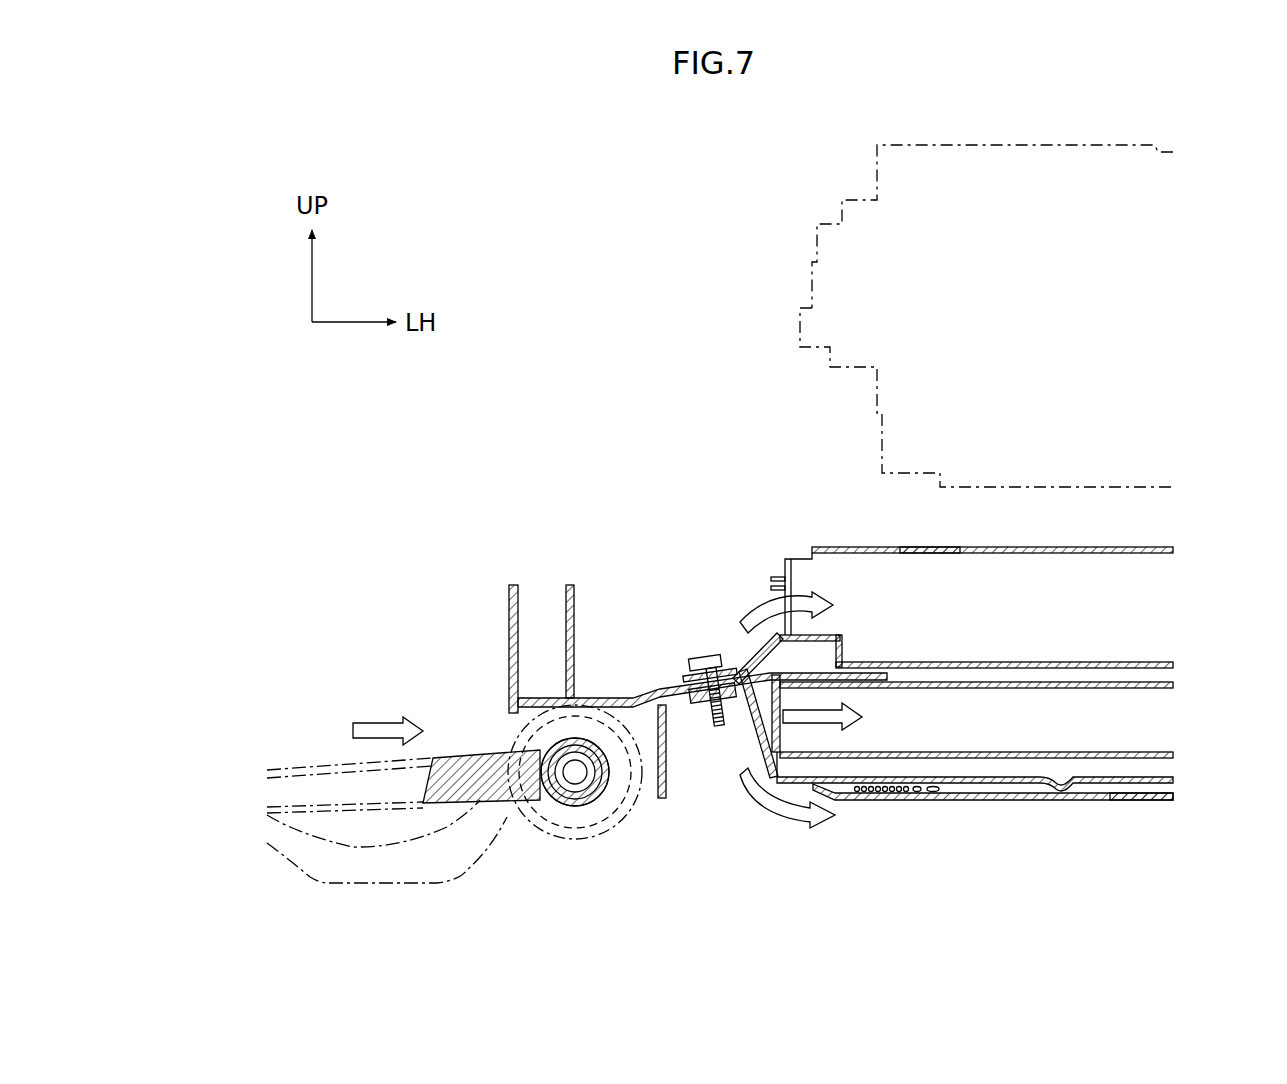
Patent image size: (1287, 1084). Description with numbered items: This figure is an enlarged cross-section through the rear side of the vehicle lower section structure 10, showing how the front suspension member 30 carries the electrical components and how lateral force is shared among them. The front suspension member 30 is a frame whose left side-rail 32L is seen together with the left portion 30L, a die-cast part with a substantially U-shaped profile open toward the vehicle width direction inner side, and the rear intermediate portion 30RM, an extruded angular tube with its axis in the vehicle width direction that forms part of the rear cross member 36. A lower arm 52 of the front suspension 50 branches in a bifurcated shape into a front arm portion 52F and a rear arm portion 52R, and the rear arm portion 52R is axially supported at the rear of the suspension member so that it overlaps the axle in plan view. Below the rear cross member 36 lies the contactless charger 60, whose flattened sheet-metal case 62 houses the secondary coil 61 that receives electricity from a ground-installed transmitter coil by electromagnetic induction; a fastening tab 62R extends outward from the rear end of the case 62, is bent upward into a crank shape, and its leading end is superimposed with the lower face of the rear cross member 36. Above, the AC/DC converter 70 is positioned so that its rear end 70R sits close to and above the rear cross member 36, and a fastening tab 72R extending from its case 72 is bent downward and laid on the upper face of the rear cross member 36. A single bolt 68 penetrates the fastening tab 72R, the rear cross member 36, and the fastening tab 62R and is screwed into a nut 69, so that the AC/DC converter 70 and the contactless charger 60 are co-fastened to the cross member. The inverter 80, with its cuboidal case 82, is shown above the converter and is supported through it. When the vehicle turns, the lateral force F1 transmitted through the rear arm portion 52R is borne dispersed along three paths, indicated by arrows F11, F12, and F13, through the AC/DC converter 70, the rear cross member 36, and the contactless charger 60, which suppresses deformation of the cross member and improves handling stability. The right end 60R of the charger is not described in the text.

The vehicle lower section structure 10 is at (620, 416).
The front suspension member 30 is at (497, 550).
The left portion 30L is at (622, 697).
The rear intermediate portion 30RM is at (1033, 687).
The left side-rail 32L is at (508, 622).
The rear cross member 36 is at (953, 680).
The front suspension 50 is at (296, 677).
The lower arm 52 is at (330, 762).
The front arm portion 52F is at (360, 885).
The rear arm portion 52R is at (480, 756).
The contactless charger 60 is at (1055, 803).
The right end of lower duct panel 60R is at (1135, 801).
The secondary coil 61 is at (905, 793).
The case 62 is at (972, 784).
The fastening tab 62R is at (754, 726).
The bolt 68 is at (694, 660).
The nut 69 is at (704, 710).
The AC/DC converter 70 is at (1100, 545).
The rear end 70R is at (930, 547).
The case 72 is at (1013, 547).
The fastening tab 72R is at (748, 662).
The inverter 80 is at (812, 243).
The case 82 is at (800, 332).
The lateral force F1 is at (373, 722).
The arrow F11 is at (864, 718).
The arrow F12 is at (837, 596).
The arrow F13 is at (789, 826).